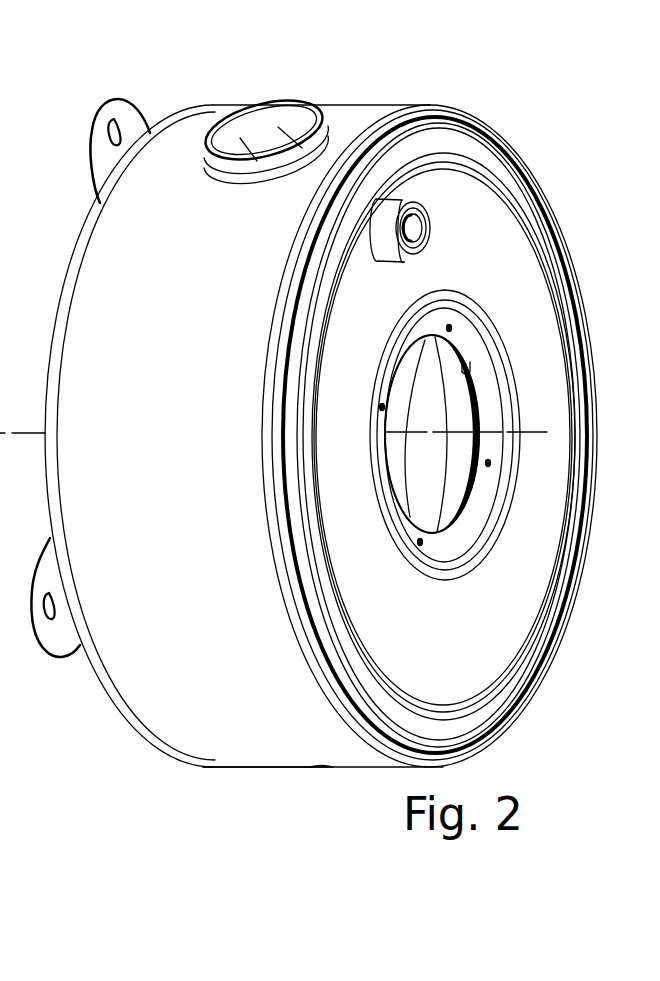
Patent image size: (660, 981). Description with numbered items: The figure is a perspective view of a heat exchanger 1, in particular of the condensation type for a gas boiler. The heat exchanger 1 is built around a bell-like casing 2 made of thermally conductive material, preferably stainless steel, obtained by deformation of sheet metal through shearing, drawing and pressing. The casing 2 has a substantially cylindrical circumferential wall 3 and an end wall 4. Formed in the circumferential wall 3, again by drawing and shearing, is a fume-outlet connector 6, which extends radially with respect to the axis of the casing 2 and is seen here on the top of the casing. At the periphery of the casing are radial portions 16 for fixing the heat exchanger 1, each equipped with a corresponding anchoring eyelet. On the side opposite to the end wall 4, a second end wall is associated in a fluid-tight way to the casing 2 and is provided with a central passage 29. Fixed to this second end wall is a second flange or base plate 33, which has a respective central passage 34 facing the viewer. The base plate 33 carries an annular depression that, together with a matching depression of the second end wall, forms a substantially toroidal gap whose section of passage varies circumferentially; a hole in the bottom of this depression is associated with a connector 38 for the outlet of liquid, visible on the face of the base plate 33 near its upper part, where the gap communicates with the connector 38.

The heat exchanger 1 is at (551, 170).
The bell-like casing 2 is at (343, 103).
The circumferential wall 3 is at (255, 747).
The end wall 4 is at (82, 233).
The fume-outlet connector 6 is at (276, 112).
The radial portions 16 is at (126, 110).
The central passage 29 is at (473, 373).
The second flange or base plate 33 is at (538, 585).
The central passage 34 is at (514, 428).
The connector for outlet of liquid 38 is at (398, 262).